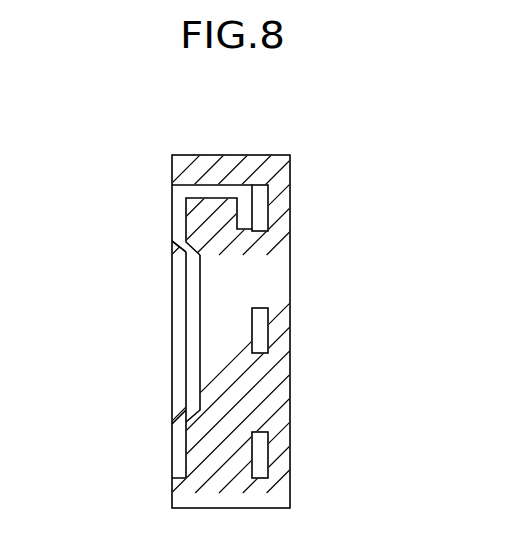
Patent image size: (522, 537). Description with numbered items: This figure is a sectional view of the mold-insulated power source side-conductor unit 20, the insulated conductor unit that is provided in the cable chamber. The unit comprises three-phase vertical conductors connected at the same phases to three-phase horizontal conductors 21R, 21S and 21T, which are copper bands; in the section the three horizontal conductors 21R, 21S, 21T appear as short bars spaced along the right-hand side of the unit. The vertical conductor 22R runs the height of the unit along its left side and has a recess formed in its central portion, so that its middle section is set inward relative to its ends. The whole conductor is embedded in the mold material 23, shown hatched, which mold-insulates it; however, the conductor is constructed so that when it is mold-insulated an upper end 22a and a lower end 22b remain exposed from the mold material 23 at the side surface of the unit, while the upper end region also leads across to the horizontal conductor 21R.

The power source side-conductor unit 20 is at (338, 129).
The horizontal conductor 21R is at (267, 205).
The horizontal conductor 21S is at (262, 332).
The horizontal conductor 21T is at (262, 457).
The upper end 22a is at (174, 218).
The vertical conductor 22R is at (190, 321).
The lower end 22b is at (174, 450).
The mold material 23 is at (277, 393).